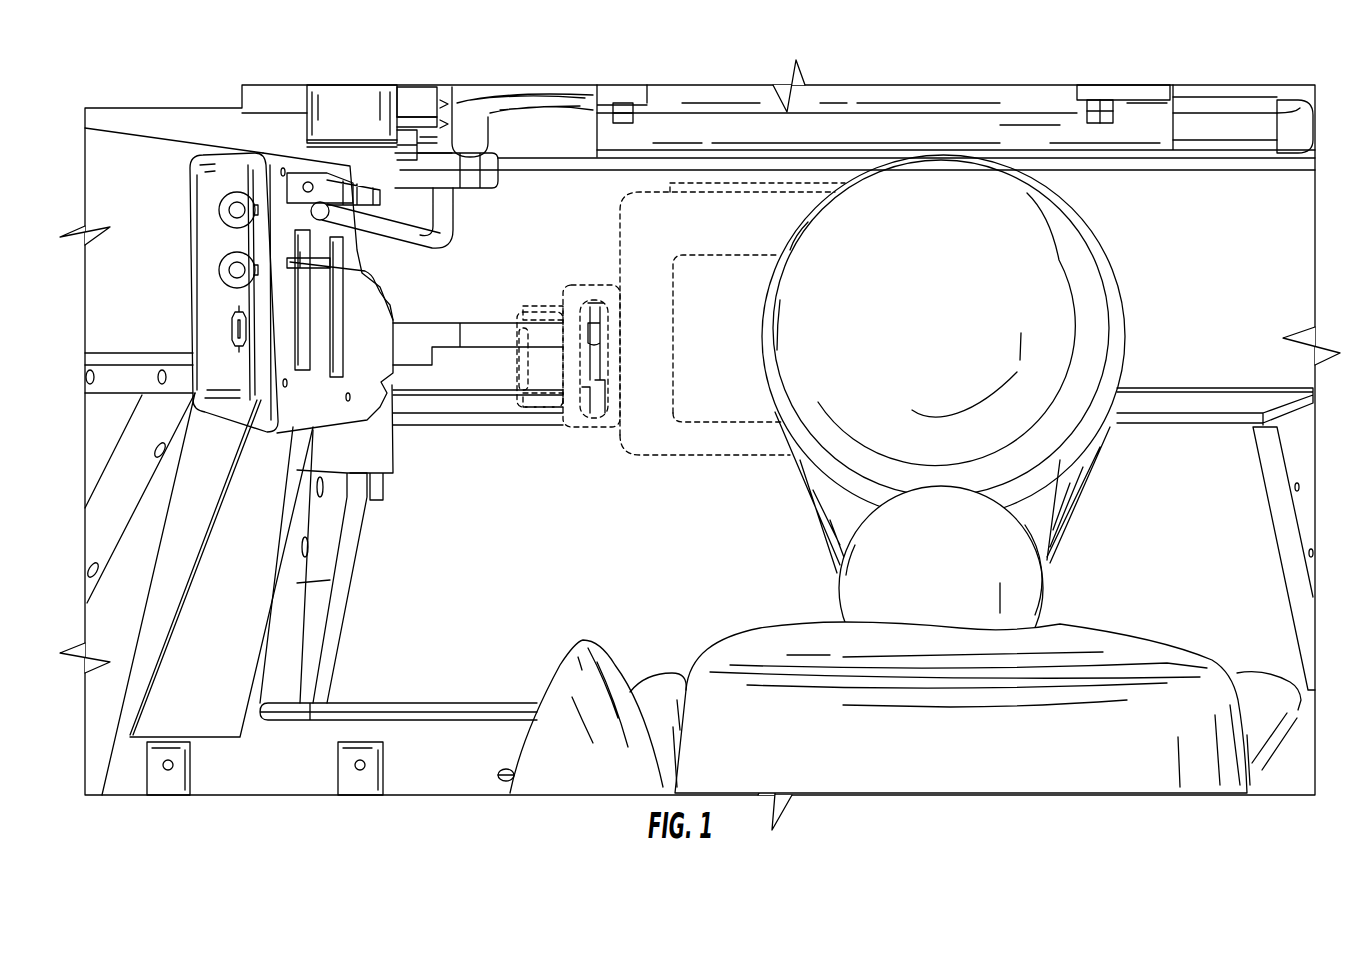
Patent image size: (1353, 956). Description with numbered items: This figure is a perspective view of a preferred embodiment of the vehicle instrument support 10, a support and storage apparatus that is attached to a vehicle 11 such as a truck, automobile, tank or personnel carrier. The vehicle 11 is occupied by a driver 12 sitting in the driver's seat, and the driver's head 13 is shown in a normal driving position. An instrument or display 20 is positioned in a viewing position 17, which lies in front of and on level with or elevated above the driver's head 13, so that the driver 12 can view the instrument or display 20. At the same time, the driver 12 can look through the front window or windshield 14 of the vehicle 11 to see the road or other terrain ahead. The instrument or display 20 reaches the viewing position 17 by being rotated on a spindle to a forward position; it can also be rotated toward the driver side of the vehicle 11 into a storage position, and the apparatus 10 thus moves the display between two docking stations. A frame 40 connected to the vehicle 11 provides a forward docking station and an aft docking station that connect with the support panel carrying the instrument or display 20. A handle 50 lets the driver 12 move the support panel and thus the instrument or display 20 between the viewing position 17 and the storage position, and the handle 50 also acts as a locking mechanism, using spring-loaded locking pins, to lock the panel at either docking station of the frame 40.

The vehicle instrument support 10 is at (468, 462).
The vehicle 11 is at (417, 705).
The driver 12 is at (800, 483).
The driver's head 13 is at (909, 318).
The front window or windshield 14 is at (568, 566).
The viewing position 17 is at (675, 470).
The instrument or display 20 is at (620, 435).
The frame 40 is at (393, 440).
The handle 50 is at (537, 405).